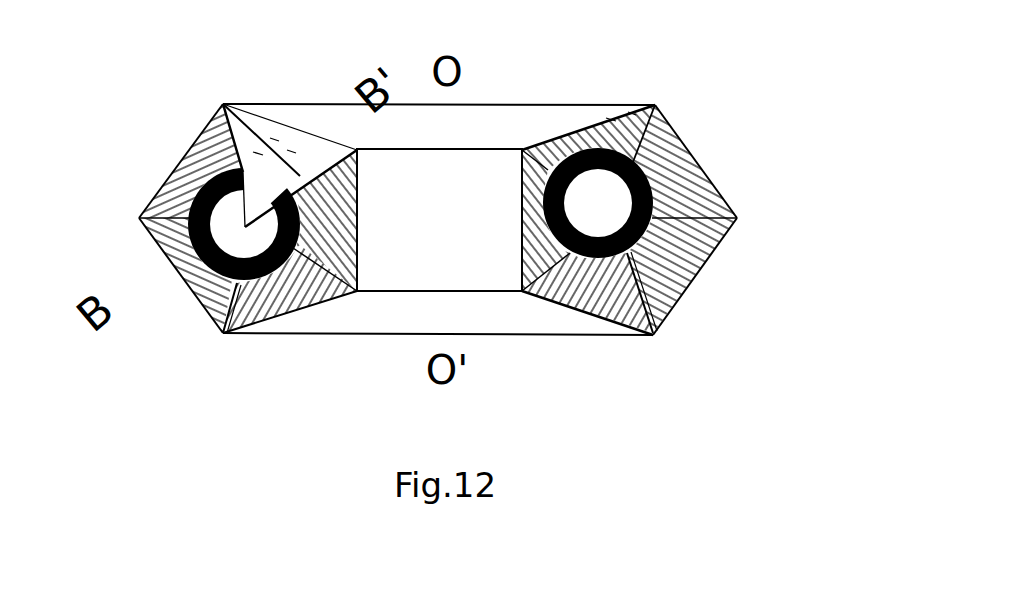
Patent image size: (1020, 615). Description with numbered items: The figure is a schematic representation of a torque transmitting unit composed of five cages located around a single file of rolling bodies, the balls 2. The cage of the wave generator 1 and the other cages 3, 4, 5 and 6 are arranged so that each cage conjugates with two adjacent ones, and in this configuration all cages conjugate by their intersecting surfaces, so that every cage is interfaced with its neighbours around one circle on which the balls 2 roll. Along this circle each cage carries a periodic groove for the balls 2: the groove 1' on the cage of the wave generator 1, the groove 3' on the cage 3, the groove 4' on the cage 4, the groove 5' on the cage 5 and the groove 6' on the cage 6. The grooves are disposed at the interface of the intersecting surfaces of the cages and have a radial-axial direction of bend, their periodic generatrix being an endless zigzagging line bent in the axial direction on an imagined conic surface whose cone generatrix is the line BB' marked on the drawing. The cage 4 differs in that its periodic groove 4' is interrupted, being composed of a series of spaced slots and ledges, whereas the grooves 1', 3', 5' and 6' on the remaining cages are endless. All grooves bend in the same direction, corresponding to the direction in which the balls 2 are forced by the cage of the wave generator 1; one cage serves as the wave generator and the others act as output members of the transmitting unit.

The cage of the wave generator 1 is at (439, 219).
The periodic groove 1' is at (510, 220).
The rolling bodies 2 is at (598, 136).
The cage 3 is at (719, 276).
The periodic groove 3' is at (163, 309).
The cage 4 is at (611, 92).
The interrupted periodic groove 4' is at (290, 115).
The cage 5 is at (723, 157).
The periodic groove 5' is at (167, 142).
The cage 6 is at (587, 327).
The periodic groove 6' is at (290, 322).